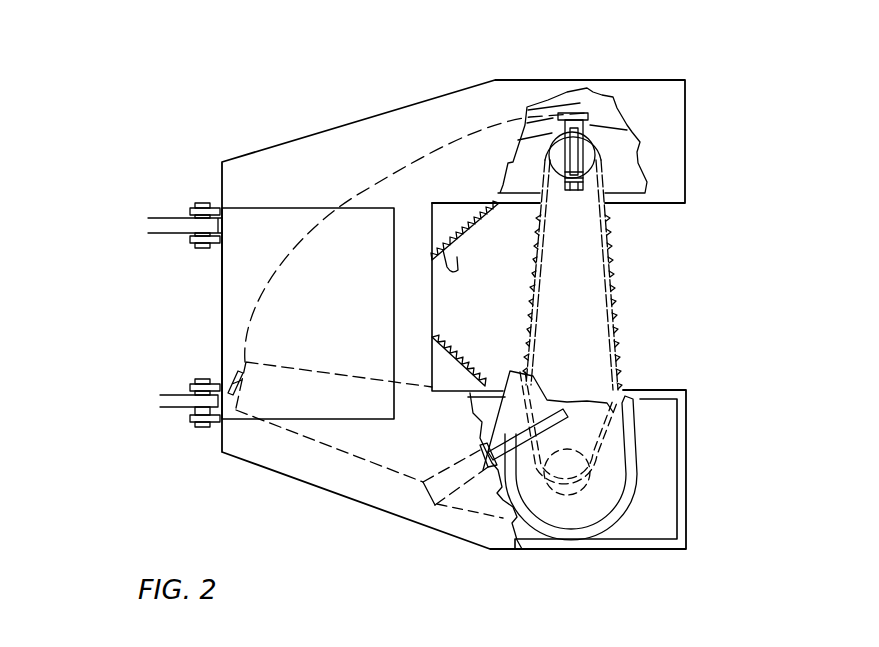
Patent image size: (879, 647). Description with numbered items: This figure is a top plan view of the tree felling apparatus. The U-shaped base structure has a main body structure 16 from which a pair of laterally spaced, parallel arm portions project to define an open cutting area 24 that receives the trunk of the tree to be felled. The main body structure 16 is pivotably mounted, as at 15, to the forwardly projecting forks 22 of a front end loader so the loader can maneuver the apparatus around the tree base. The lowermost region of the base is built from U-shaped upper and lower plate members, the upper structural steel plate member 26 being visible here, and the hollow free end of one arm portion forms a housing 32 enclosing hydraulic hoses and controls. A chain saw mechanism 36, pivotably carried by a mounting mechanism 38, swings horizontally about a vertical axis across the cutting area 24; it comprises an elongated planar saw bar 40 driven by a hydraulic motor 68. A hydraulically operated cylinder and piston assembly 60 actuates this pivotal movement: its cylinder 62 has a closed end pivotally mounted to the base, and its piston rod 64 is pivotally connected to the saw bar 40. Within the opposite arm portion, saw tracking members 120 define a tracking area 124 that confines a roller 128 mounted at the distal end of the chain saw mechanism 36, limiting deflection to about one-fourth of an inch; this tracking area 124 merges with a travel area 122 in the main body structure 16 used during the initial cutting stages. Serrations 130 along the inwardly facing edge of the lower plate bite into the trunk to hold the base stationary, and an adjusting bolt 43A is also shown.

The pivotable mounting 15 is at (200, 203).
The main body structure 16 is at (222, 310).
The forks 22 is at (147, 228).
The open cutting area 24 is at (490, 290).
The upper structural steel plate member 26 is at (264, 249).
The housing 32 is at (687, 487).
The chain saw mechanism 36 is at (618, 227).
The mounting mechanism 38 is at (618, 516).
The saw bar 40 is at (580, 277).
The tension adjusting bolt 43A is at (575, 82).
The cylinder and piston assembly 60 is at (472, 492).
The cylinder 62 is at (433, 512).
The piston rod 64 is at (540, 406).
The hydraulic motor 68 is at (568, 474).
The saw tracking members 120 is at (602, 110).
The travel area 122 is at (350, 200).
The tracking area 124 is at (547, 92).
The roller 128 is at (232, 377).
The serrations 130 is at (432, 260).